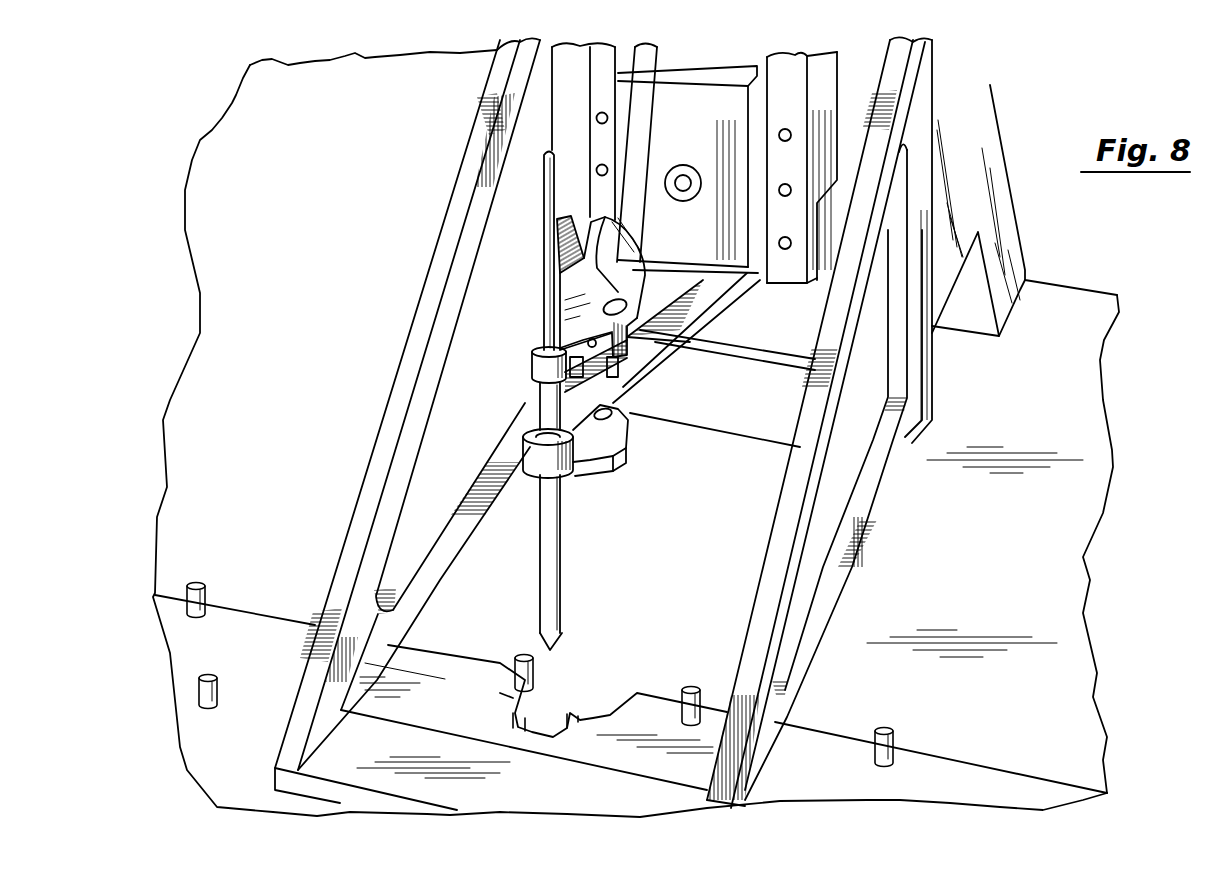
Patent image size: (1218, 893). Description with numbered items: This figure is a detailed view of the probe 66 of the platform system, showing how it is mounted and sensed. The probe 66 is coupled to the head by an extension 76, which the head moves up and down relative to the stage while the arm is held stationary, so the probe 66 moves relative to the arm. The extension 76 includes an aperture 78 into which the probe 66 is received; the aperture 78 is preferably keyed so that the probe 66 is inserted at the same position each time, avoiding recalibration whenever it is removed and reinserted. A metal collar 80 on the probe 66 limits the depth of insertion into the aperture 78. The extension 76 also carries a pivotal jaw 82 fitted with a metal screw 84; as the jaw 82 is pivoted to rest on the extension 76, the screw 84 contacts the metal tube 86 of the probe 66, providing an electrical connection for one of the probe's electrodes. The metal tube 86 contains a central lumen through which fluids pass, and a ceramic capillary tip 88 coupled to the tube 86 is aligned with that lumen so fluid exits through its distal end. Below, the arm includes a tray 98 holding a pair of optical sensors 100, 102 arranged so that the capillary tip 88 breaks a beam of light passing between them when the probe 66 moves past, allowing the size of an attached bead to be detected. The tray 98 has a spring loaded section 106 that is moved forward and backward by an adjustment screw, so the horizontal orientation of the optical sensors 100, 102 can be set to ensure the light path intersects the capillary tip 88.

The probe 66 is at (553, 548).
The extension 76 is at (652, 352).
The aperture 78 is at (567, 430).
The metal collar 80 is at (533, 370).
The pivotal jaw 82 is at (620, 277).
The metal screw 84 is at (570, 250).
The metal tube 86 is at (556, 228).
The ceramic capillary tip 88 is at (565, 647).
The tray 98 is at (642, 733).
The optical sensor 100 is at (550, 725).
The optical sensor 102 is at (574, 728).
The spring loaded section 106 is at (443, 693).